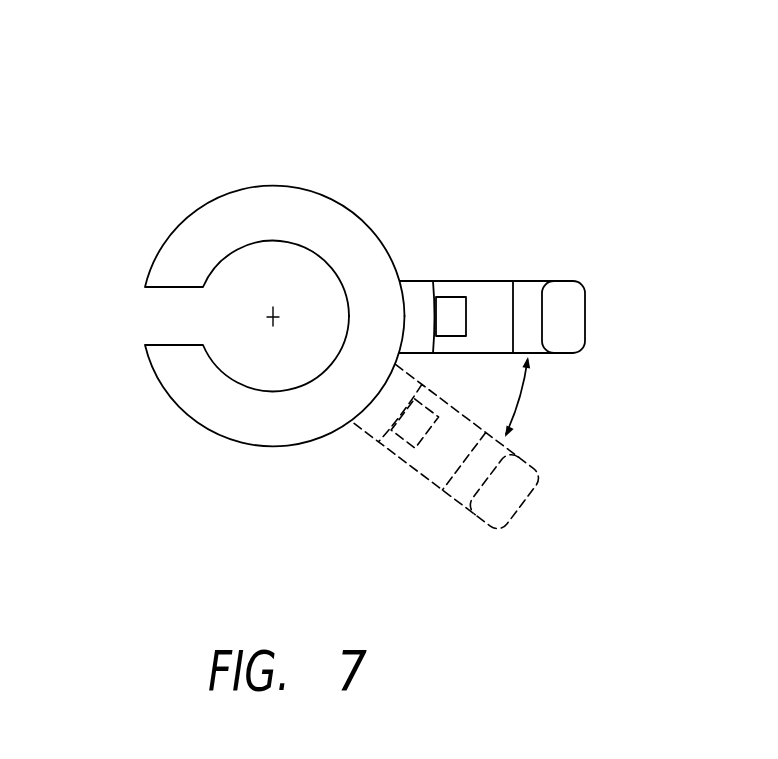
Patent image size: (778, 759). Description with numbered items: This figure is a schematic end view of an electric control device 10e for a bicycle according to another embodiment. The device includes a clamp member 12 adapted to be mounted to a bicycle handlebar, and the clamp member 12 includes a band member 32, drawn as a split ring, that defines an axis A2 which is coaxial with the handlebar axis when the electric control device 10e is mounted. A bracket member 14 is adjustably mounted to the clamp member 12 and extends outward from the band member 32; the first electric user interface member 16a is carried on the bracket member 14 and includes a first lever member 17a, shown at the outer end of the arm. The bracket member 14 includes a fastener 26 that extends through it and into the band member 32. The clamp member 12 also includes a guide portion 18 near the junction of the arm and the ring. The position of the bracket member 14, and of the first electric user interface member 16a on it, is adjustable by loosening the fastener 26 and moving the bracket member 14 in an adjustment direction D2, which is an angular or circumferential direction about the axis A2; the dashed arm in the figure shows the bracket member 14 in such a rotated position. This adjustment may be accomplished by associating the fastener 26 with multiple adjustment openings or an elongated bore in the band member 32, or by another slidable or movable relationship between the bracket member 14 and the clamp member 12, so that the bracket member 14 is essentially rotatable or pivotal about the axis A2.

The electric control device 10e is at (531, 130).
The band member 32 is at (272, 202).
The clamp member 12 is at (208, 418).
The axis A2 is at (268, 317).
The first electric user interface member 16a is at (606, 250).
The guide portion 18 is at (412, 245).
The bracket member 14 is at (417, 290).
The fastener 26 is at (450, 307).
The first lever member 17a is at (572, 317).
The adjustment direction D2 is at (520, 398).